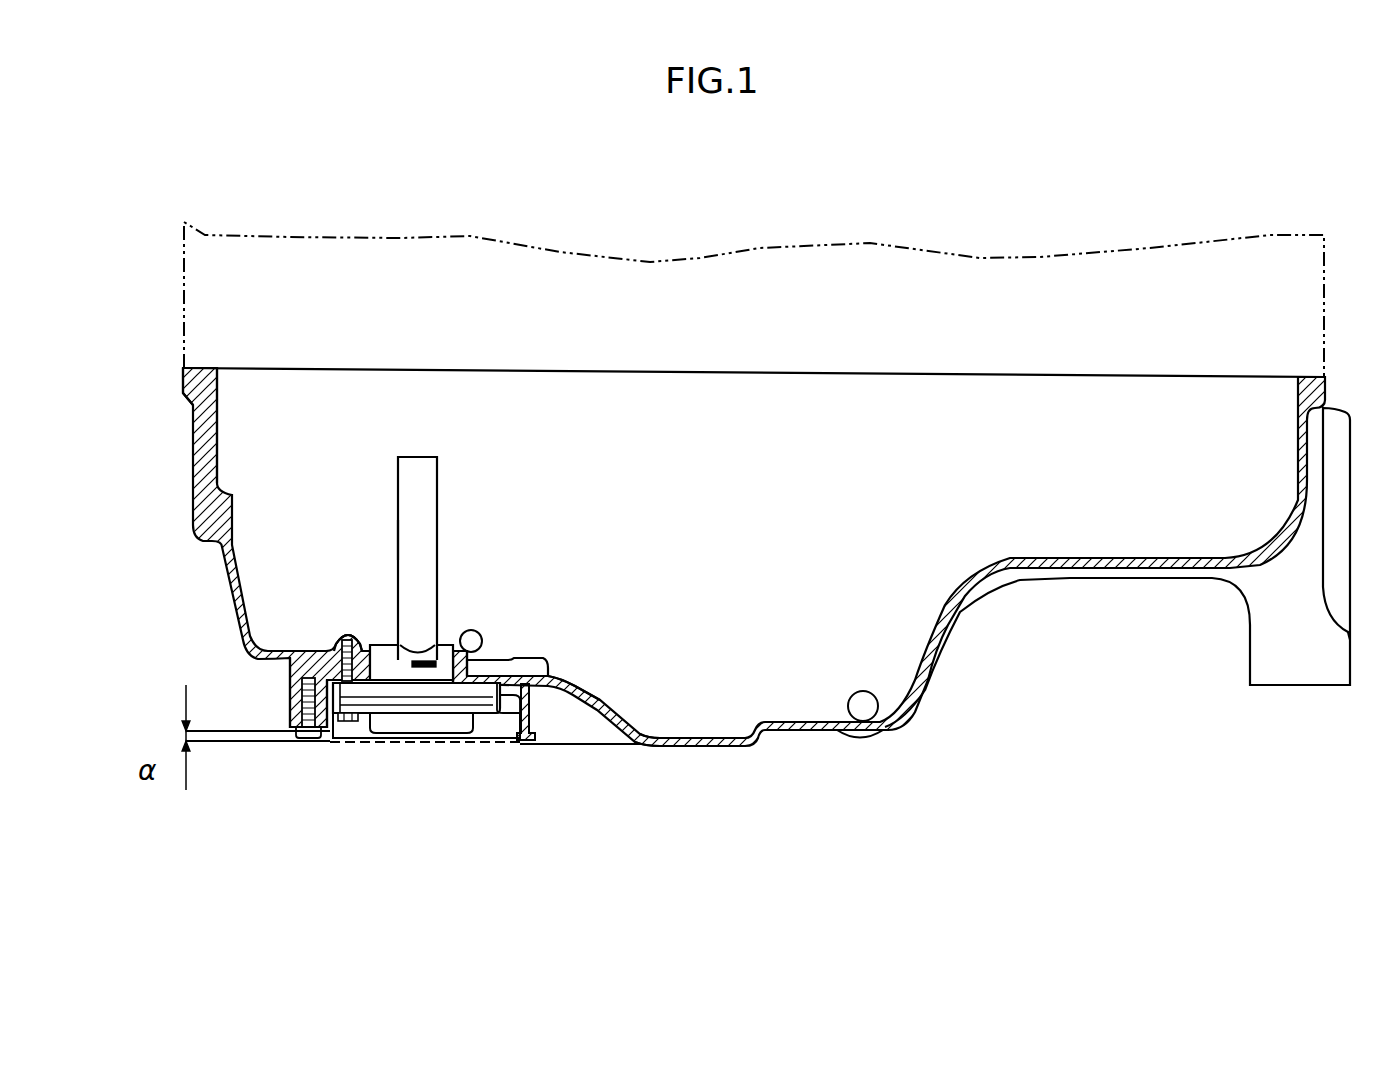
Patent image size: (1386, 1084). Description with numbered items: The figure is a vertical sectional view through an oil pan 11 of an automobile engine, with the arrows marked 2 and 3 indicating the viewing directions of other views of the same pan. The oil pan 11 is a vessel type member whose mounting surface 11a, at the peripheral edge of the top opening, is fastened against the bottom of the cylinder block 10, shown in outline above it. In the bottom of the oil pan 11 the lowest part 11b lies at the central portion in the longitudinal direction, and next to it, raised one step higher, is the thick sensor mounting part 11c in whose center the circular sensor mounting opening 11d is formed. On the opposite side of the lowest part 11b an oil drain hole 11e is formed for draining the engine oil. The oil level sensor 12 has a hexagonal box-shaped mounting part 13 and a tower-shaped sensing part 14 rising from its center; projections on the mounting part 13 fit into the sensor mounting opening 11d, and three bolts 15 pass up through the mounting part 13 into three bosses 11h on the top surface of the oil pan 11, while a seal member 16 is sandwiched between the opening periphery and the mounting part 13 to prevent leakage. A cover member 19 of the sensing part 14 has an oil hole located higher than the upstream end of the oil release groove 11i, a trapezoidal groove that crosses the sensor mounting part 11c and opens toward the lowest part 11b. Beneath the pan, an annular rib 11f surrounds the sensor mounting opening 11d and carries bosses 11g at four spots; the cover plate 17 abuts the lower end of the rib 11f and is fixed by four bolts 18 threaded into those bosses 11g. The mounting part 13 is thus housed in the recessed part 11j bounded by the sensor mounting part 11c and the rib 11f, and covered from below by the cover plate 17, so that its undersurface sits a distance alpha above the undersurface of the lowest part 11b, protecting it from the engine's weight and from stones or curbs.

The cylinder block 10 is at (1033, 287).
The oil pan 11 is at (990, 617).
The mounting surface 11a is at (198, 368).
The lowest part 11b is at (684, 746).
The sensor mounting part 11c is at (362, 640).
The sensor mounting opening 11d is at (452, 648).
The oil drain hole 11e is at (862, 702).
The annular rib 11f is at (533, 708).
The bosses 11g is at (290, 705).
The bosses 11h is at (475, 638).
The oil release groove 11i is at (512, 660).
The recessed part 11j is at (550, 686).
The oil level sensor 12 is at (440, 557).
The mounting part 13 is at (458, 703).
The sensing part 14 is at (438, 503).
The bolts 15 is at (348, 720).
The seal member 16 is at (420, 683).
The cover plate 17 is at (508, 743).
The bolts 18 is at (310, 740).
The cover member 19 is at (404, 541).
The view direction arrow 2 is at (671, 810).
The view direction arrow 3 is at (726, 313).